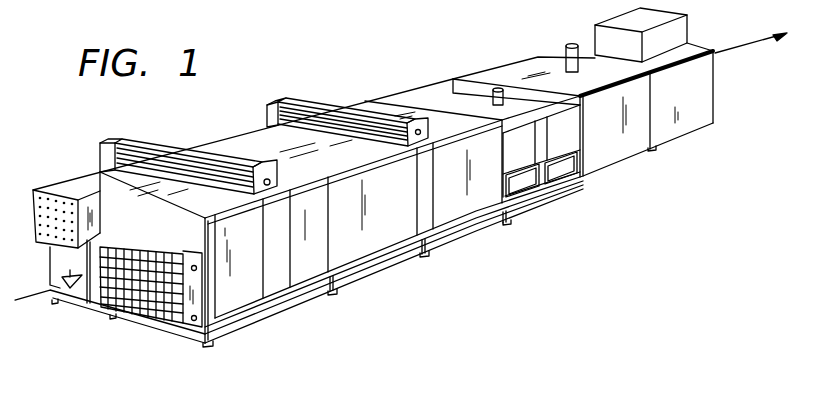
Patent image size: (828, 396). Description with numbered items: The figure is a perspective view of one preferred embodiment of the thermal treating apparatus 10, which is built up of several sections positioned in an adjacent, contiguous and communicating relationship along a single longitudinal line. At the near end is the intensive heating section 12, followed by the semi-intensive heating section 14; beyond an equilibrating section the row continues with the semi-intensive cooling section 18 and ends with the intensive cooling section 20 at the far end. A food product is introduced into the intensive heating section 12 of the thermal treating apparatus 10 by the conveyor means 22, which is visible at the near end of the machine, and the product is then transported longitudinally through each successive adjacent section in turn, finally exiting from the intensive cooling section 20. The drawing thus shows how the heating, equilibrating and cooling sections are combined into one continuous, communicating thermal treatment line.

The thermal treating apparatus 10 is at (333, 90).
The intensive heating section 12 is at (98, 185).
The semi-intensive heating section 14 is at (250, 150).
The semi-intensive cooling section 18 is at (613, 150).
The intensive cooling section 20 is at (687, 97).
The conveyor means 22 is at (141, 290).